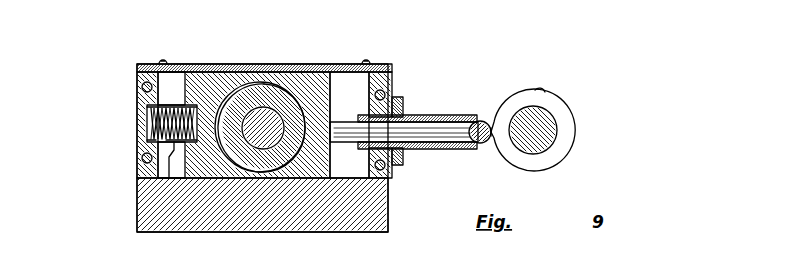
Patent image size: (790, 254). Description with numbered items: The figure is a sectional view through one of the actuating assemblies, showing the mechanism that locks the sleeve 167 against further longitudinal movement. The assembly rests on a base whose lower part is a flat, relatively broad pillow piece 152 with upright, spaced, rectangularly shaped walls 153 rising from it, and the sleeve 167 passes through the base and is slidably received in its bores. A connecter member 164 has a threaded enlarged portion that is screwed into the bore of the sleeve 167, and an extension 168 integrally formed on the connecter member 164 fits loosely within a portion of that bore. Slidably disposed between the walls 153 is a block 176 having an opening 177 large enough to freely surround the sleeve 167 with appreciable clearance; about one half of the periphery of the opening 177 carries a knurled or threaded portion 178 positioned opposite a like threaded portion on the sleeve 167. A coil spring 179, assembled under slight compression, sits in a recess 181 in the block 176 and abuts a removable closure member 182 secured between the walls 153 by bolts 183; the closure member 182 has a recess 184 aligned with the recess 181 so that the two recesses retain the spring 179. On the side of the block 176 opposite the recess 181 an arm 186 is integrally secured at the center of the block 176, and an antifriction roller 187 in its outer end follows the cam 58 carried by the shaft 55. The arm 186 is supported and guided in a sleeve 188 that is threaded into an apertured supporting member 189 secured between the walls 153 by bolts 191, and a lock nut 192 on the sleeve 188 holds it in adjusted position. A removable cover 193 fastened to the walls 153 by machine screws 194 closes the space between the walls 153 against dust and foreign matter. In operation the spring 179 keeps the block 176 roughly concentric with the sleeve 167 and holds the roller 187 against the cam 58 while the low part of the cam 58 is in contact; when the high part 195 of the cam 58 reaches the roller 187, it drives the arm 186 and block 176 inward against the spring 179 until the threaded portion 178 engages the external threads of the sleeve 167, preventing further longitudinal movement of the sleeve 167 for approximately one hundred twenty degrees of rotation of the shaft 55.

The pillow piece 152 is at (387, 225).
The recess 181 is at (136, 196).
The opening 177 is at (223, 82).
The removable closure member 182 is at (137, 80).
The removable cover 193 is at (184, 72).
The coil spring 179 is at (143, 120).
The recess 184 is at (137, 144).
The bolts 183 is at (134, 84).
The extension 168 is at (266, 104).
The connecter member 164 is at (251, 100).
The sleeve 167 is at (293, 100).
The knurled or threaded portion 178 is at (299, 153).
The block 176 is at (314, 78).
The machine screws 194 is at (164, 59).
The upright walls 153 is at (348, 85).
The bolts 191 is at (398, 100).
The apertured supporting member 189 is at (385, 91).
The lock nut 192 is at (403, 173).
The sleeve 188 is at (437, 115).
The arm 186 is at (449, 128).
The antifriction roller 187 is at (480, 143).
The cam 58 is at (545, 93).
The shaft 55 is at (553, 133).
The high part 195 is at (495, 120).